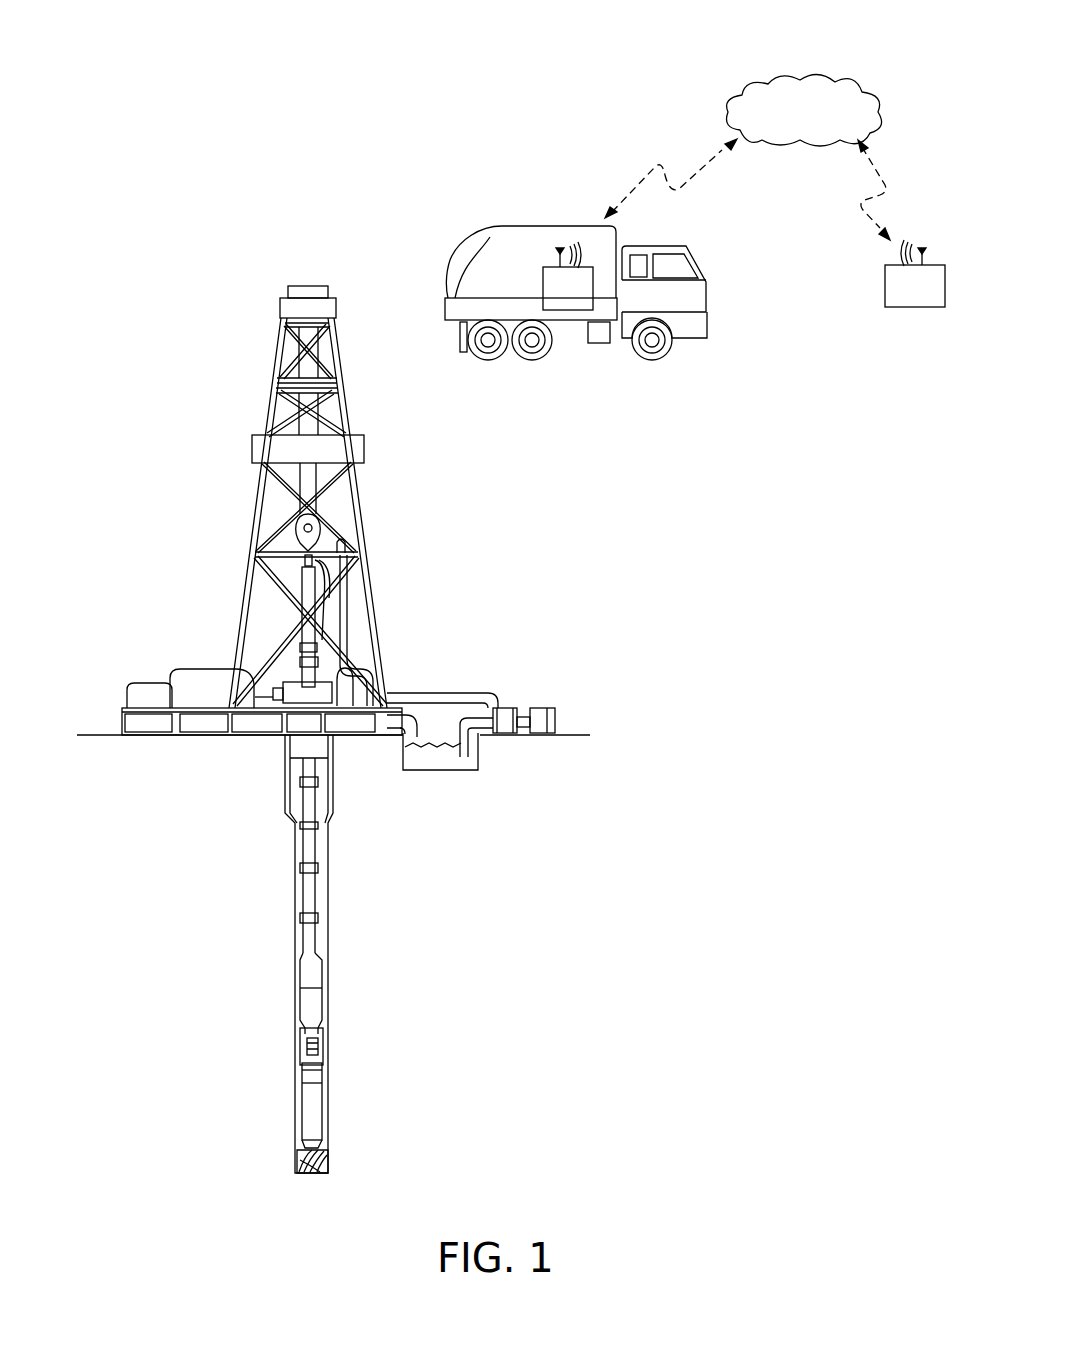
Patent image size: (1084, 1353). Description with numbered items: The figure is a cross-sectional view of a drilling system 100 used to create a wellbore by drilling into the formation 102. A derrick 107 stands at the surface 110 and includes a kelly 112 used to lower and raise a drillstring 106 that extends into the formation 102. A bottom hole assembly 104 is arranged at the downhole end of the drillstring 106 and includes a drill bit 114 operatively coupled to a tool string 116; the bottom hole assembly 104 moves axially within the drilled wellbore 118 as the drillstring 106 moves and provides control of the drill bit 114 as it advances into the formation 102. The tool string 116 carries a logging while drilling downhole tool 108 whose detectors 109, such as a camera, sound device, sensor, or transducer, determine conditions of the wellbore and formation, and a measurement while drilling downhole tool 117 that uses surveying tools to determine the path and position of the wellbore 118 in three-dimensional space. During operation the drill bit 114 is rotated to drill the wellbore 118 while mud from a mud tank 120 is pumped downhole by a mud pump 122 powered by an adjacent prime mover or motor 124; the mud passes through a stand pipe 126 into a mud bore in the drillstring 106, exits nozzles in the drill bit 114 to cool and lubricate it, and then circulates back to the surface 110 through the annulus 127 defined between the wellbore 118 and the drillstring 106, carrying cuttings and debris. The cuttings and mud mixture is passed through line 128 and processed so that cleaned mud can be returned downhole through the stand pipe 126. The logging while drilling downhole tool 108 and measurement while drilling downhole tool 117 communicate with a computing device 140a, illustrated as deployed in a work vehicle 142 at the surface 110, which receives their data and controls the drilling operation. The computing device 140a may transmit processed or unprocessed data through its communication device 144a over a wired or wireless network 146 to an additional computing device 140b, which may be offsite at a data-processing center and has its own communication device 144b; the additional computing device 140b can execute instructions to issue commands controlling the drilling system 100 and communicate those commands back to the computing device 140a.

The drilling system 100 is at (556, 505).
The formation 102 is at (98, 792).
The bottom hole assembly 104 is at (226, 994).
The drillstring 106 is at (308, 893).
The derrick 107 is at (254, 514).
The logging while drilling downhole tool 108 is at (303, 1040).
The detectors 109 is at (320, 1047).
The surface 110 is at (88, 733).
The kelly 112 is at (318, 528).
The drill bit 114 is at (328, 1162).
The tool string 116 is at (310, 1105).
The measurement while drilling downhole tool 117 is at (328, 1077).
The wellbore 118 is at (296, 855).
The mud tank 120 is at (447, 760).
The mud pump 122 is at (513, 709).
The motor 124 is at (540, 720).
The stand pipe 126 is at (348, 618).
The annulus 127 is at (282, 896).
The line 128 is at (417, 714).
The computing device 140a is at (547, 287).
The additional computing device 140b is at (912, 308).
The work vehicle 142 is at (702, 327).
The communication device 144a is at (572, 237).
The communication device 144b is at (915, 240).
The network 146 is at (840, 90).